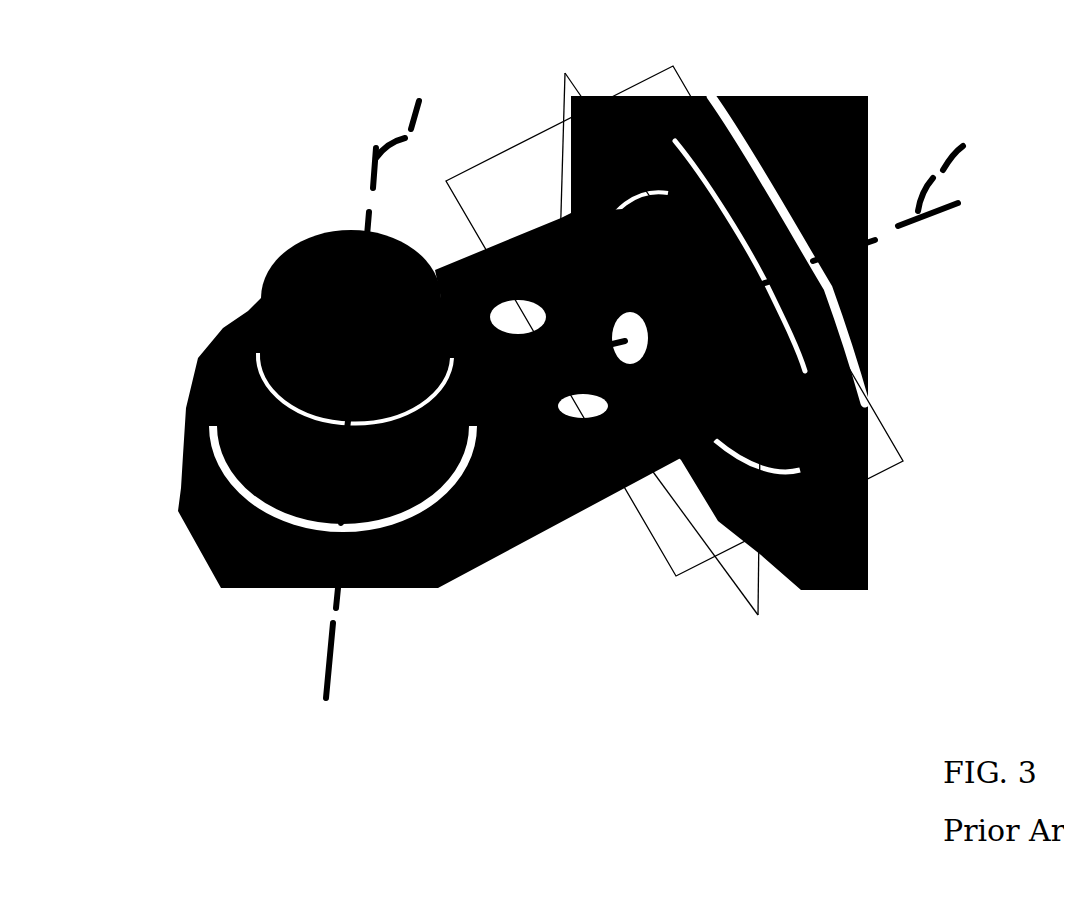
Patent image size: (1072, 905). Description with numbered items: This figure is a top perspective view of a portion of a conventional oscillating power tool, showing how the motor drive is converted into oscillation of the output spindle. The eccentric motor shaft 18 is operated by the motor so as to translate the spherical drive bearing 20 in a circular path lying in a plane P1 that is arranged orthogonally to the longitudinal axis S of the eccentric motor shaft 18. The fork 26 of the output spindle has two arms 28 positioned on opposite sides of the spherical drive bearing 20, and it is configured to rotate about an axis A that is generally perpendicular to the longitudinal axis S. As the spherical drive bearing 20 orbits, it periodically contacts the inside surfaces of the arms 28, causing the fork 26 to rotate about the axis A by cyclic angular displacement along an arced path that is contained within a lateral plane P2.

The eccentric motor shaft 18 is at (653, 350).
The spherical drive bearing 20 is at (669, 268).
The fork 26 is at (560, 443).
The arms 28 is at (572, 300).
The axis A is at (373, 375).
The longitudinal axis S is at (805, 229).
The plane P1 is at (745, 585).
The lateral plane P2 is at (690, 575).